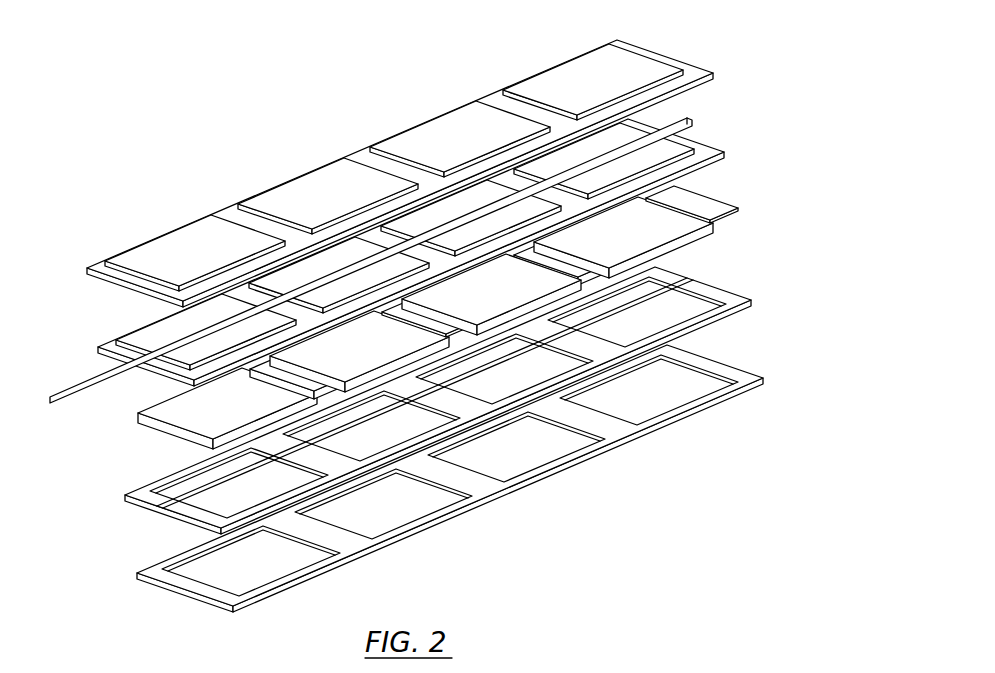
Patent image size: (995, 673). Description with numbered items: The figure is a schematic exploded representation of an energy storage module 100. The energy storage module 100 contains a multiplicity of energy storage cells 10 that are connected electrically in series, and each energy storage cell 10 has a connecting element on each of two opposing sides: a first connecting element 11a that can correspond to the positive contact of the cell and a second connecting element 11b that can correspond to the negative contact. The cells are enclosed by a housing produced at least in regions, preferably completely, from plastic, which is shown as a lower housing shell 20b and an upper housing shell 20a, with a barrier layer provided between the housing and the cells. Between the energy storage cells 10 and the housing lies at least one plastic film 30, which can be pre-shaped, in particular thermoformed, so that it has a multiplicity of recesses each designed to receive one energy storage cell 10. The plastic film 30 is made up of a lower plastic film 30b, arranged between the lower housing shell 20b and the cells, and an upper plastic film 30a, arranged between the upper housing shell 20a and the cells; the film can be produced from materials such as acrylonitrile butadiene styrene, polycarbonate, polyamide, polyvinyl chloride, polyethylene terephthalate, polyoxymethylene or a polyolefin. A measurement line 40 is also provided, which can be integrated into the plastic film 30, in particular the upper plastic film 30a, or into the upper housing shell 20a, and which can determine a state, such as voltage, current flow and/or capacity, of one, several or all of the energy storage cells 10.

The energy storage module 100 is at (243, 133).
The energy storage cell 10 is at (647, 241).
The first connecting element 11a is at (690, 207).
The second connecting element 11b is at (627, 270).
The upper housing shell 20a is at (716, 57).
The lower housing shell 20b is at (757, 357).
The plastic film 30 is at (892, 232).
The upper plastic film 30a is at (735, 126).
The lower plastic film 30b is at (766, 271).
The measurement line 40 is at (70, 392).